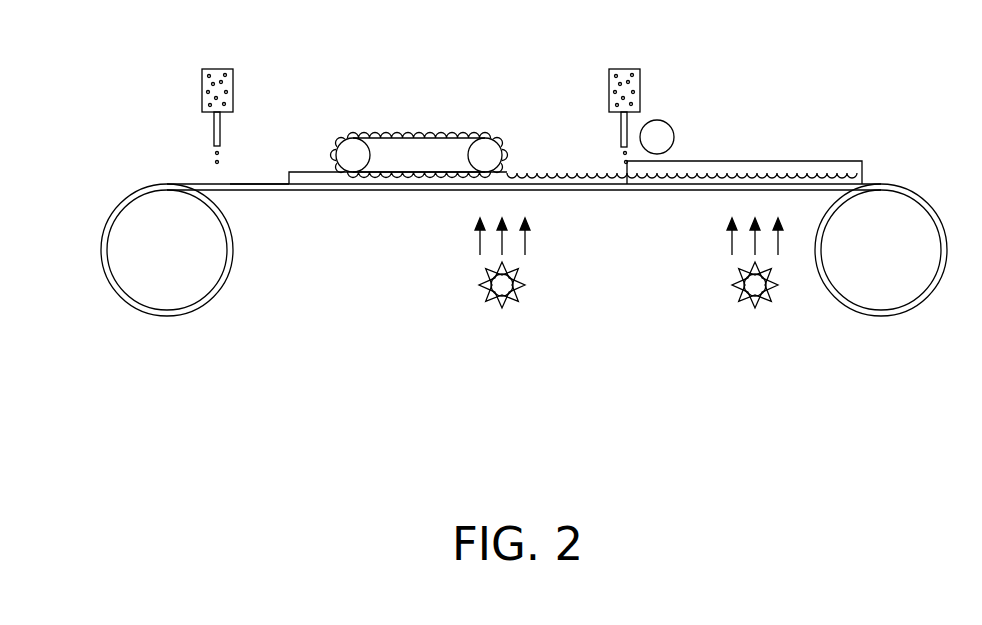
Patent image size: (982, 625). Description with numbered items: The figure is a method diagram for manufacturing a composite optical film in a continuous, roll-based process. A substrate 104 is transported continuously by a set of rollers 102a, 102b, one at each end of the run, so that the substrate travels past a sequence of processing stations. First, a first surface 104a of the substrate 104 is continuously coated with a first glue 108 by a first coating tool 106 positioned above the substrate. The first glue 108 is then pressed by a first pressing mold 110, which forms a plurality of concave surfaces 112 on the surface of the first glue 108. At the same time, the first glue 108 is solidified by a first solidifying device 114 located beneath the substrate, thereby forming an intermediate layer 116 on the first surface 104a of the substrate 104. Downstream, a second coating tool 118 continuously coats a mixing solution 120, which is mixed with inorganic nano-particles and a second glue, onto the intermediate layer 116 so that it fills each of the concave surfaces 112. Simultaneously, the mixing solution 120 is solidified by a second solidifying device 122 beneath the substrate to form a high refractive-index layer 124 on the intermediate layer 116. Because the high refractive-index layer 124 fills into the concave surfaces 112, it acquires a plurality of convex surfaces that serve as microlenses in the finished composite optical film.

The roller 102a is at (155, 295).
The roller 102b is at (870, 295).
The substrate 104 is at (920, 198).
The first surface 104a is at (260, 184).
The first coating tool 106 is at (220, 66).
The first glue 108 is at (304, 172).
The first pressing mold 110 is at (390, 133).
The concave surfaces 112 is at (546, 173).
The first solidifying device 114 is at (510, 290).
The intermediate layer 116 is at (550, 180).
The second coating tool 118 is at (628, 67).
The mixing solution 120 is at (622, 152).
The second solidifying device 122 is at (762, 290).
The high refractive-index layer 124 is at (713, 167).